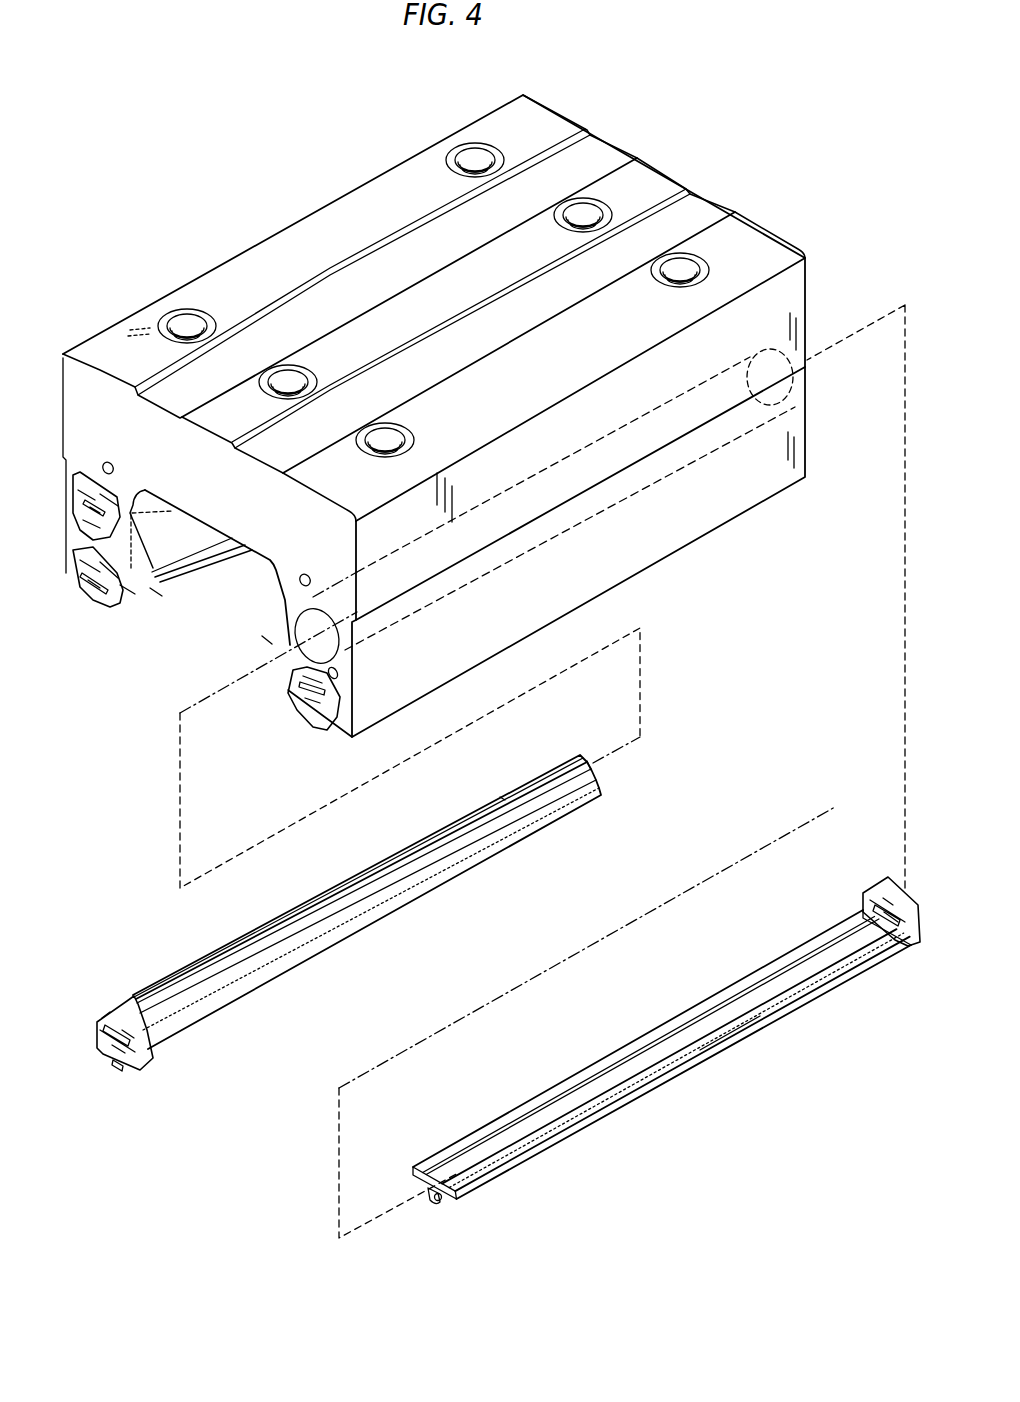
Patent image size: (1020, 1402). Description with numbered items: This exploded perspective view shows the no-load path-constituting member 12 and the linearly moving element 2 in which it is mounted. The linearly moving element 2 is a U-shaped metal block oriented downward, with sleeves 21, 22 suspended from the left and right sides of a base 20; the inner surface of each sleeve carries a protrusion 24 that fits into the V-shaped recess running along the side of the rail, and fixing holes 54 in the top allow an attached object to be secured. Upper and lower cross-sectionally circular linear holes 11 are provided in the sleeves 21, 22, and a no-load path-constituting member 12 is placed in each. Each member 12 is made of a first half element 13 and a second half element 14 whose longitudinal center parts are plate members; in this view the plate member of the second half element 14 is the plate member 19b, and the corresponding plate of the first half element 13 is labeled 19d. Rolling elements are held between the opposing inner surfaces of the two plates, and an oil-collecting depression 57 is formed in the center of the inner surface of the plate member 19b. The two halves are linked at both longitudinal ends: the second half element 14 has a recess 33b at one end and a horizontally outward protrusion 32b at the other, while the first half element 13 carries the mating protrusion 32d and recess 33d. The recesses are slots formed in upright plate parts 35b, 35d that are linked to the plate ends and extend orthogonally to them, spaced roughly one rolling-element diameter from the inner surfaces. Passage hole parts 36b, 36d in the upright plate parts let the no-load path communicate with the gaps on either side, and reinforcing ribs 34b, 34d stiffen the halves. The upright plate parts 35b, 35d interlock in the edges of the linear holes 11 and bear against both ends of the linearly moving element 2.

The linearly moving element 2 is at (650, 180).
The fixing hole 54 is at (583, 214).
The sleeve 22 is at (678, 540).
The base 20 is at (252, 517).
The linear hole 11 is at (290, 688).
The sleeve 21 is at (128, 590).
The protrusion 24 is at (158, 593).
The no-load path-constituting member 12 is at (73, 501).
The first half element 13 is at (240, 992).
The rolling groove 19d is at (380, 913).
The rail end portion 34d is at (498, 800).
The rail end stop 32d is at (590, 762).
The end cap 35d is at (112, 1017).
The end cap tab 36d is at (128, 1035).
The end cap fastener 33d is at (122, 1072).
The second half element 14 is at (687, 1013).
The depression 57 is at (583, 1095).
The plate member 19b is at (757, 1020).
The protrusion 32b is at (428, 1193).
The reinforcing rib 34b is at (442, 1197).
The upright plate part 35b is at (873, 890).
The recess 33b is at (887, 900).
The passage hole part 36b is at (891, 915).